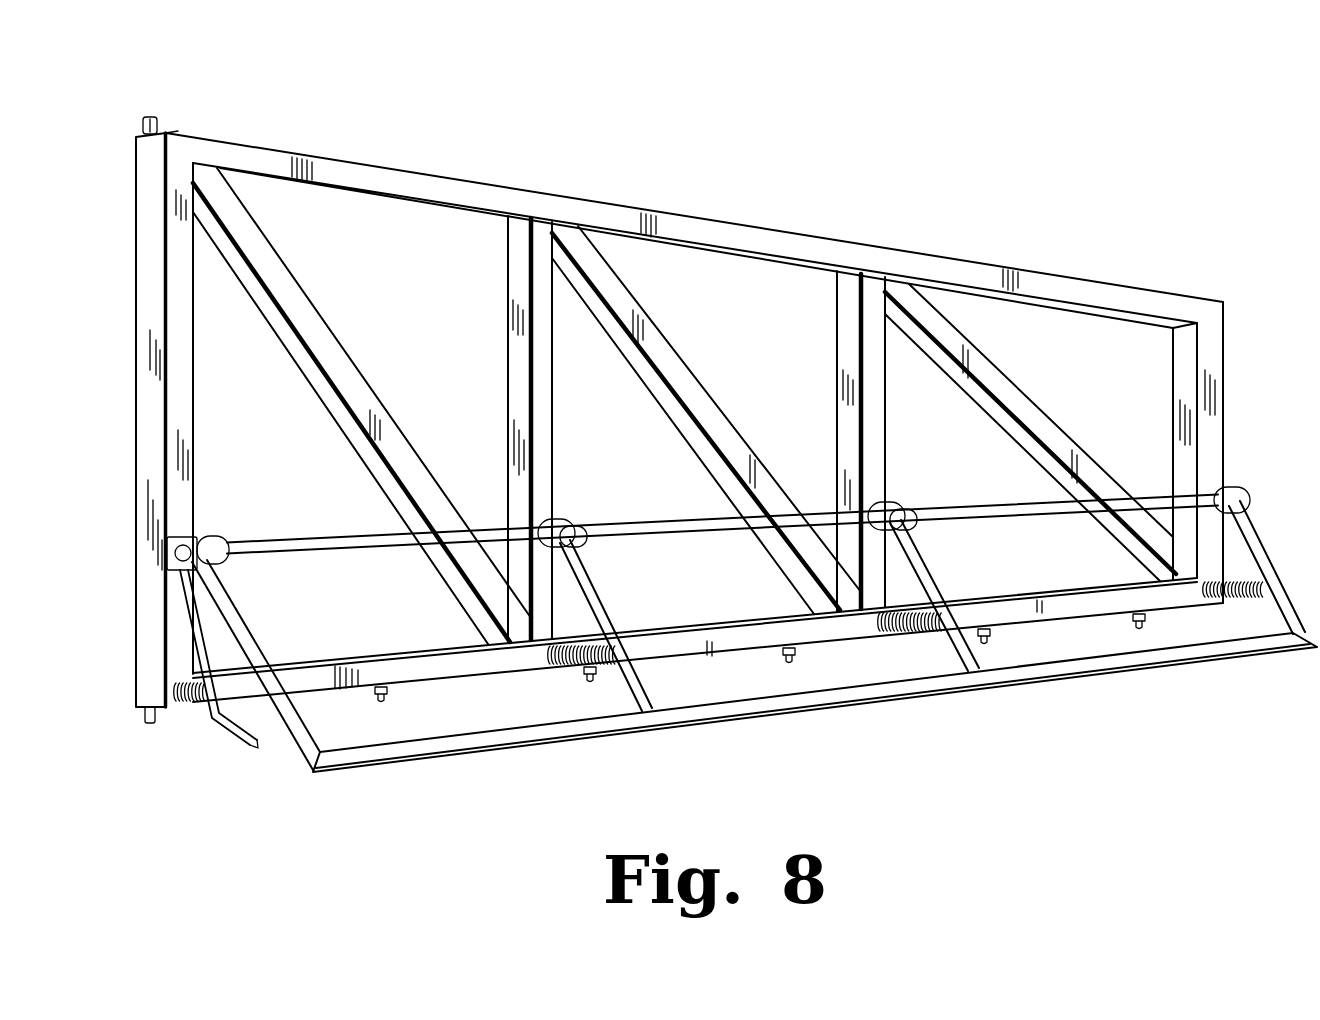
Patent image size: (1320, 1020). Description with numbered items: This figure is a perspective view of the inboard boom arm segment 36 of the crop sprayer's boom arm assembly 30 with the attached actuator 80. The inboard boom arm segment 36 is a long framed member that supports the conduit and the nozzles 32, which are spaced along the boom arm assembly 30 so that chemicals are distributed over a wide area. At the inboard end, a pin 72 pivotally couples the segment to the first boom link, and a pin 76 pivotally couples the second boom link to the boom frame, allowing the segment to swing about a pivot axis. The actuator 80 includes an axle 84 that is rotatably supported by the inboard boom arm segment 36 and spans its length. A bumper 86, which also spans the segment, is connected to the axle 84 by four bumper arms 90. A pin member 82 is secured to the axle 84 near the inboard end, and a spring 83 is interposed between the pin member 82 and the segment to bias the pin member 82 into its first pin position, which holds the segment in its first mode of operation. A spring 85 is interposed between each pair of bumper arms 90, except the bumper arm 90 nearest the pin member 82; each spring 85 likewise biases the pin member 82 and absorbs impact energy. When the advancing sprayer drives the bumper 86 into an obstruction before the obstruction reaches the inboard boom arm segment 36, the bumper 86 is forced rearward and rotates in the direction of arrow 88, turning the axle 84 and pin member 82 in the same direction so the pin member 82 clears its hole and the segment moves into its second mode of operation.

The boom arm assembly 30 is at (694, 445).
The nozzles 32 is at (383, 703).
The inboard boom arm segment 36 is at (712, 228).
The pin 72 is at (150, 117).
The pin 76 is at (148, 723).
The actuator 80 is at (743, 650).
The pin member 82 is at (258, 750).
The spring 83 is at (193, 702).
The axle 84 is at (255, 545).
The spring 85 is at (553, 668).
The bumper 86 is at (1062, 680).
The arrow 88 is at (322, 860).
The bumper arm 90 is at (245, 627).